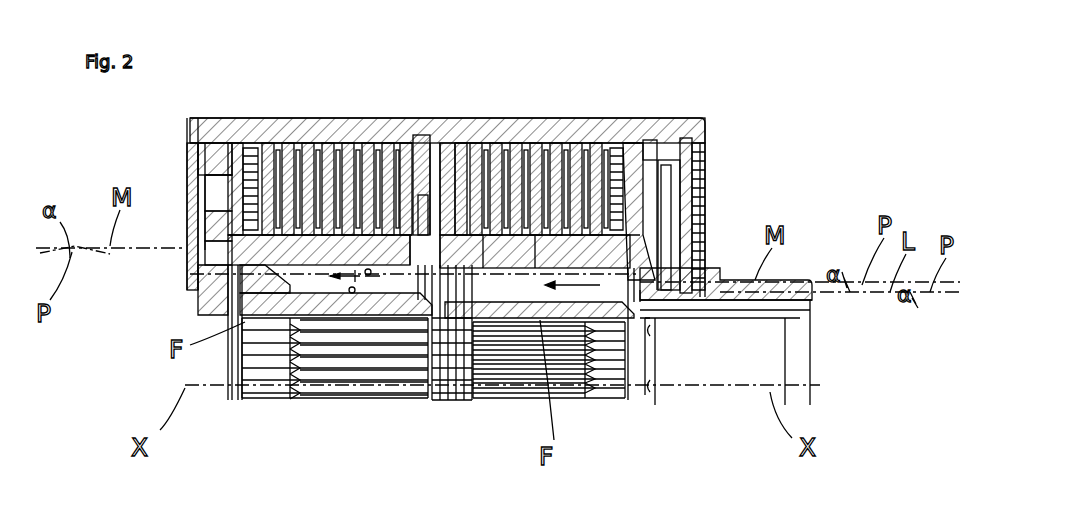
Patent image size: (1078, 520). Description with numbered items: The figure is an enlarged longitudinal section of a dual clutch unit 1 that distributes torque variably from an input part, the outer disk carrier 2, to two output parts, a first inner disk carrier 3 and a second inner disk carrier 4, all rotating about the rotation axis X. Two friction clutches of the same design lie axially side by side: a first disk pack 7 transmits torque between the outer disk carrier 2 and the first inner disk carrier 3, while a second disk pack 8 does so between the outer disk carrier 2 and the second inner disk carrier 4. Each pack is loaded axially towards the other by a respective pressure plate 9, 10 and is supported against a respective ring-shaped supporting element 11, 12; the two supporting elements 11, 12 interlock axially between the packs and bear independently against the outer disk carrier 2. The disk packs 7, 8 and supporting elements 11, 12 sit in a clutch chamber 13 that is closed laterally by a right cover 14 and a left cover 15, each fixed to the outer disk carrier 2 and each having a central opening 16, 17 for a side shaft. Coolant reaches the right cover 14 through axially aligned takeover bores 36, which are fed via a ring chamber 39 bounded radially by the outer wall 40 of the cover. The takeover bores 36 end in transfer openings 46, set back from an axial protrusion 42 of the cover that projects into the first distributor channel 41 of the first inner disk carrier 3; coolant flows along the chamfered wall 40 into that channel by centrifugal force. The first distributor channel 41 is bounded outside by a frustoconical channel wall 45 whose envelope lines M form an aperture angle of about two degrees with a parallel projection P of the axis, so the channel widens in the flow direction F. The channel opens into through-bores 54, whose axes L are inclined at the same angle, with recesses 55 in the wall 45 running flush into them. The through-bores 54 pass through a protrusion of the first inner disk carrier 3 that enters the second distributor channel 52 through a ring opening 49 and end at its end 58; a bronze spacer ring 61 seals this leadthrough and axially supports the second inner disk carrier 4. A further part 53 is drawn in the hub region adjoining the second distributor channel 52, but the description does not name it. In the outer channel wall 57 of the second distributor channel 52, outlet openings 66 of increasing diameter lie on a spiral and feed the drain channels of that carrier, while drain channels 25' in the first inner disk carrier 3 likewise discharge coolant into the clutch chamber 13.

The dual clutch unit 1 is at (742, 88).
The outer disk carrier 2 is at (560, 120).
The first inner disk carrier 3 is at (538, 310).
The second inner disk carrier 4 is at (322, 318).
The first disk pack 7 is at (626, 180).
The second disk pack 8 is at (280, 140).
The pressure plate 9 is at (700, 186).
The pressure plate 10 is at (235, 165).
The first supporting element 11 is at (455, 170).
The second supporting element 12 is at (432, 168).
The clutch chamber 13 is at (190, 235).
The right cover 14 is at (684, 125).
The left cover 15 is at (202, 130).
The central opening 16 is at (800, 365).
The central opening 17 is at (190, 360).
The drain channels 25' is at (553, 150).
The takeover bores 36 is at (780, 298).
The ring chamber 39 is at (808, 322).
The radially outer wall 40 is at (730, 280).
The first distributor channel 41 is at (600, 320).
The axial protrusion 42 is at (690, 228).
The radially outer channel wall 45 is at (650, 142).
The transfer openings 46 is at (660, 335).
The ring opening 49 is at (420, 140).
The second distributor channel 52 is at (290, 282).
The hub 53 is at (630, 200).
The through-bores 54 is at (447, 300).
The recesses 55 is at (497, 140).
The radially outer channel wall 57 is at (328, 176).
The end 58 is at (425, 300).
The ring 61 is at (440, 205).
The outlet openings 66 is at (245, 278).